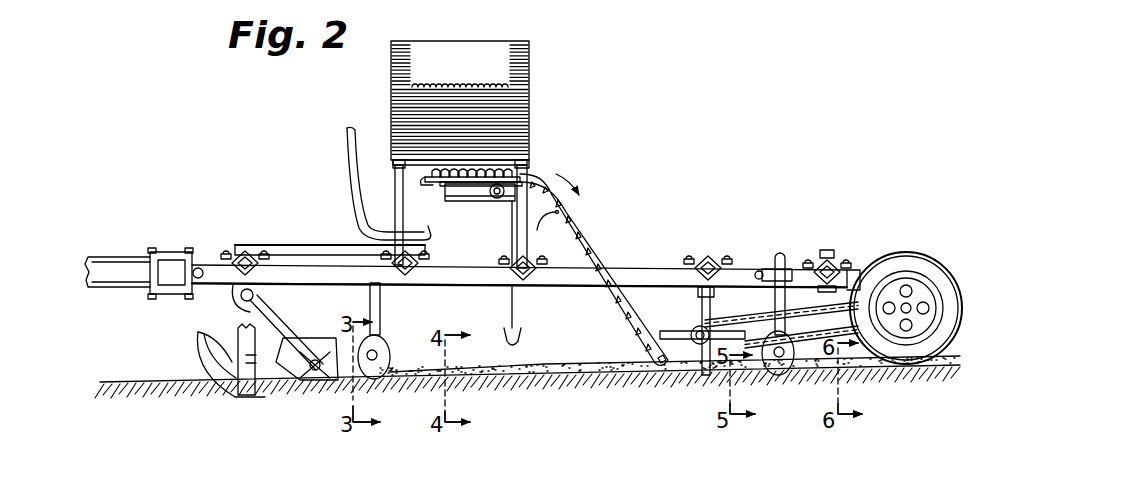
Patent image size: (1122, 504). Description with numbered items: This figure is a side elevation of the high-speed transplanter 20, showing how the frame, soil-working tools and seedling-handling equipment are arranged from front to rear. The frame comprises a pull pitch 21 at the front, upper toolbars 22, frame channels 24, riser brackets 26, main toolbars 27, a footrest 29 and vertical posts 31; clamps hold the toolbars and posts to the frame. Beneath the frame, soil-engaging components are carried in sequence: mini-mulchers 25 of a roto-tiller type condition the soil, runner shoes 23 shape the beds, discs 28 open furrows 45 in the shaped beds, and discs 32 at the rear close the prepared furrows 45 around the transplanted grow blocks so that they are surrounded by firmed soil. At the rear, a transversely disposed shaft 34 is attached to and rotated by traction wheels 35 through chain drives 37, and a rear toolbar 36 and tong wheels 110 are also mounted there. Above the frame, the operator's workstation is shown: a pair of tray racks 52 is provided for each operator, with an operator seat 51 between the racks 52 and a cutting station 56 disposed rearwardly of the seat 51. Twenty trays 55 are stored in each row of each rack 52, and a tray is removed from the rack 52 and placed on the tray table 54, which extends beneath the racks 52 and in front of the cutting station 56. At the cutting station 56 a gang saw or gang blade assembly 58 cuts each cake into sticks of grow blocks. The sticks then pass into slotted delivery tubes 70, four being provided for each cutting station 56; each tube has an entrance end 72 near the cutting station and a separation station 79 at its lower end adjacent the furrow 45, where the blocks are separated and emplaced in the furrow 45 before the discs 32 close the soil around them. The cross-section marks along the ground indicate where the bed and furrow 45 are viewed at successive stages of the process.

The planter unit 20 is at (262, 244).
The pull pitch 21 is at (114, 262).
The upper toolbars 22 is at (396, 162).
The runner shoes 23 is at (204, 355).
The frame channels 24 is at (637, 261).
The mini-mulchers 25 is at (308, 346).
The riser brackets 26 is at (550, 230).
The main toolbars 27 is at (515, 262).
The discs 28 is at (384, 356).
The footrest 29 is at (511, 328).
The vertical posts 31 is at (380, 305).
The discs 32 is at (785, 376).
The shaft 34 is at (696, 343).
The traction wheels 35 is at (924, 262).
The rear toolbar 36 is at (831, 258).
The chain drives 37 is at (793, 312).
The furrows 45 is at (541, 365).
The operator seat 51 is at (353, 196).
The tray racks 52 is at (508, 42).
The tray table 54 is at (443, 182).
The trays 55 is at (455, 86).
The cutting station 56 is at (462, 186).
The gang blade assembly 58 is at (494, 199).
The delivery tubes 70 is at (592, 208).
The entrance end 72 is at (522, 167).
The separation station 79 is at (660, 368).
The tong wheels 110 is at (700, 297).